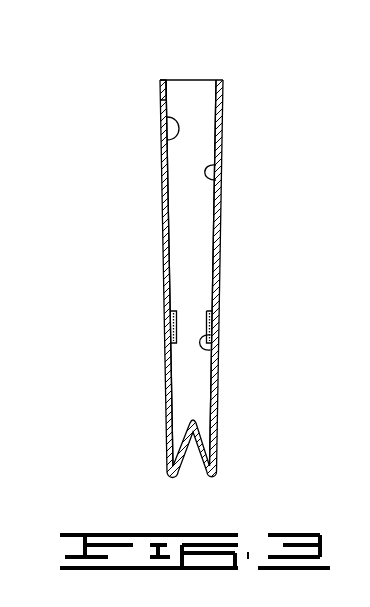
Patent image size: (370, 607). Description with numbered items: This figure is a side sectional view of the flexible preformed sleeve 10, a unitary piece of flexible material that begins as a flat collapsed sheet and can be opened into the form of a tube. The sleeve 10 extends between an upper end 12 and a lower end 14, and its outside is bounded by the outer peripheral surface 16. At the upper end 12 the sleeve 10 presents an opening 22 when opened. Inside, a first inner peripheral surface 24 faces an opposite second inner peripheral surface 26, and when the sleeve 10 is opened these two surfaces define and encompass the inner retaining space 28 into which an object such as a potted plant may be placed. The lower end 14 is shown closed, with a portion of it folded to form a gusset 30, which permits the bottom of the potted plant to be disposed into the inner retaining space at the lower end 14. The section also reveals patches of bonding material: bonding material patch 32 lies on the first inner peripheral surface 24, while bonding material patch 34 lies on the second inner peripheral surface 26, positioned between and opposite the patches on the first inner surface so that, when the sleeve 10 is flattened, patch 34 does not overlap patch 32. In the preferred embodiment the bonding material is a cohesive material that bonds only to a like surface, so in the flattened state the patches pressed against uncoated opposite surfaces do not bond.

The flexible preformed sleeve 10 is at (185, 273).
The upper end 12 is at (162, 80).
The lower end 14 is at (210, 478).
The outer peripheral surface 16 is at (163, 205).
The opening 22 is at (193, 81).
The first inner peripheral surface 24 is at (166, 118).
The second inner peripheral surface 26 is at (216, 177).
The inner retaining space 28 is at (197, 120).
The gusset 30 is at (191, 421).
The bonding material patch 32 is at (177, 318).
The bonding material patch 34 is at (205, 350).